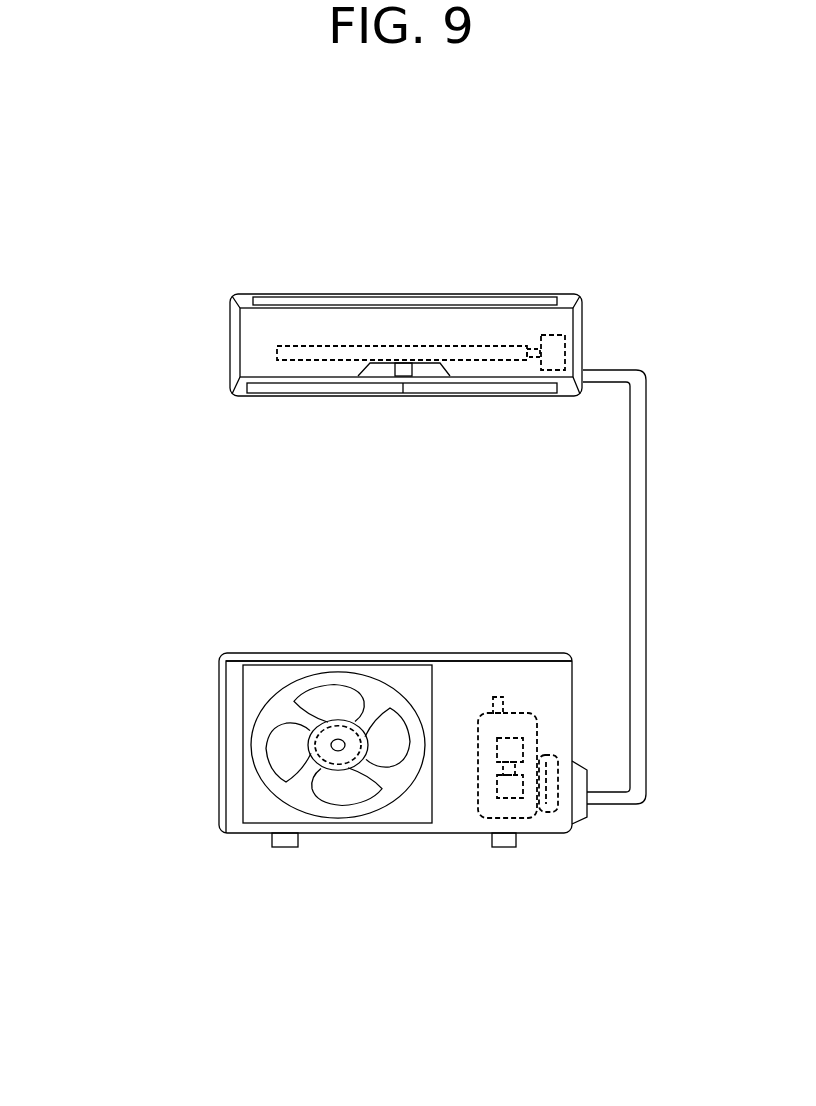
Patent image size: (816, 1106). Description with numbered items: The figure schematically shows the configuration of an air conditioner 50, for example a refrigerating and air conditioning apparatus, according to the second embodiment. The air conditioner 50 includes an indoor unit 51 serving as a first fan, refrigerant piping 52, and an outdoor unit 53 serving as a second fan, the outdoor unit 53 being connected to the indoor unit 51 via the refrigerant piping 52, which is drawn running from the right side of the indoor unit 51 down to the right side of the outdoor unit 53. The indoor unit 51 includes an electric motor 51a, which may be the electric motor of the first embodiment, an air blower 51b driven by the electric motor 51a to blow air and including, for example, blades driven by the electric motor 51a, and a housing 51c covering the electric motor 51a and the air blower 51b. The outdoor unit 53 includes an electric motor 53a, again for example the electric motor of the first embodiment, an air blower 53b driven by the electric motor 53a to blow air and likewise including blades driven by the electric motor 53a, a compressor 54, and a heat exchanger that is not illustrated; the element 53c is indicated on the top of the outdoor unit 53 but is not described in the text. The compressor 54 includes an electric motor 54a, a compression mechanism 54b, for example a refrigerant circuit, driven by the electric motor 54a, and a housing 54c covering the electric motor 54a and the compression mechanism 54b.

The air conditioner 50 is at (139, 152).
The indoor unit 51 is at (286, 275).
The electric motor 51a is at (565, 350).
The air blower 51b is at (277, 349).
The housing 51c is at (397, 296).
The refrigerant piping 52 is at (646, 530).
The outdoor unit 53 is at (289, 612).
The electric motor 53a is at (340, 766).
The air blower 53b is at (243, 711).
The top panel of outdoor unit 53c is at (393, 653).
The compressor 54 is at (466, 719).
The electric motor 54a is at (510, 742).
The compression mechanism 54b is at (512, 788).
The housing 54c is at (482, 817).